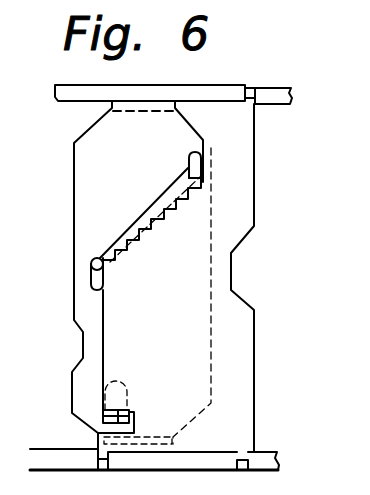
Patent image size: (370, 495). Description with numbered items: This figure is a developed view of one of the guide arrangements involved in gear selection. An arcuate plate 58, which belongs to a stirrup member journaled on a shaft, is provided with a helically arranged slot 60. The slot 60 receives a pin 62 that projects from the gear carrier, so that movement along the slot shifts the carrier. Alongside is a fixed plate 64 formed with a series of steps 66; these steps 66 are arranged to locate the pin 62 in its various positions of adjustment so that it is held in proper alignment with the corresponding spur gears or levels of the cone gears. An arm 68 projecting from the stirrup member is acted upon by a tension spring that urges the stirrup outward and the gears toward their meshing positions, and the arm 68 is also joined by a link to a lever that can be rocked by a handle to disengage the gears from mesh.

The arcuate plate 58 is at (95, 197).
The helically arranged slot 60 is at (139, 219).
The pin 62 is at (91, 266).
The fixed plate 64 is at (243, 197).
The steps 66 is at (189, 176).
The arm 68 is at (118, 399).